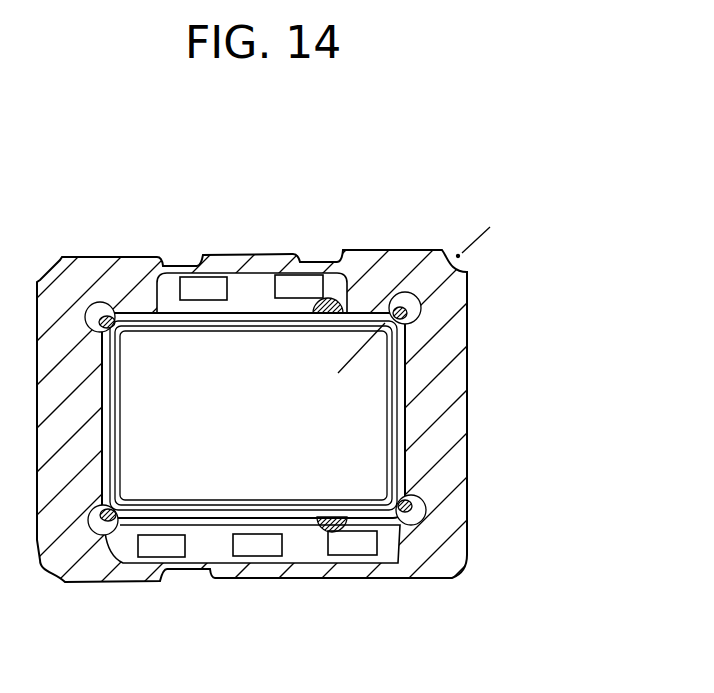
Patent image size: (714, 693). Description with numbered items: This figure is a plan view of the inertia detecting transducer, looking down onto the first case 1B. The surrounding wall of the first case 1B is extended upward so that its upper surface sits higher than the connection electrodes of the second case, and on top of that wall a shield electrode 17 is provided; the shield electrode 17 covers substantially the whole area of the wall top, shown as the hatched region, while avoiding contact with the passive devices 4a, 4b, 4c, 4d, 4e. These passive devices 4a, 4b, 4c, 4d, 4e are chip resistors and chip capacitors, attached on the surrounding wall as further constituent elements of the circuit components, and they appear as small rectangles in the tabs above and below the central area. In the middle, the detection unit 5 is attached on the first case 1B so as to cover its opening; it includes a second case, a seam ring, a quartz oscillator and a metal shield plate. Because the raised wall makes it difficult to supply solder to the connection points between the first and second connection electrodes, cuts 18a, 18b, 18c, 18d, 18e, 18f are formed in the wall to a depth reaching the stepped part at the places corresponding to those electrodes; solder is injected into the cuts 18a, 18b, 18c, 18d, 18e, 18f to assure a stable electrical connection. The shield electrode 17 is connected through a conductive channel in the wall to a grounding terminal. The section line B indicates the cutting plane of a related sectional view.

The first case 1B is at (472, 417).
The shield electrode 17 is at (443, 362).
The detection unit 5 is at (260, 343).
The passive device 4a is at (360, 543).
The passive device 4b is at (257, 547).
The passive device 4c is at (165, 548).
The passive device 4d is at (298, 287).
The passive device 4e is at (195, 288).
The cut 18a is at (417, 508).
The cut 18b is at (420, 307).
The cut 18c is at (105, 528).
The cut 18d is at (107, 313).
The cut 18e is at (330, 528).
The cut 18f is at (338, 310).
The section line B is at (413, 303).